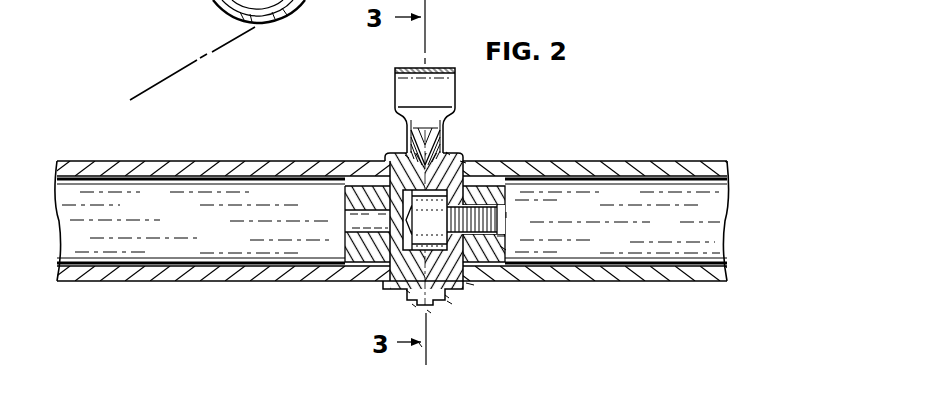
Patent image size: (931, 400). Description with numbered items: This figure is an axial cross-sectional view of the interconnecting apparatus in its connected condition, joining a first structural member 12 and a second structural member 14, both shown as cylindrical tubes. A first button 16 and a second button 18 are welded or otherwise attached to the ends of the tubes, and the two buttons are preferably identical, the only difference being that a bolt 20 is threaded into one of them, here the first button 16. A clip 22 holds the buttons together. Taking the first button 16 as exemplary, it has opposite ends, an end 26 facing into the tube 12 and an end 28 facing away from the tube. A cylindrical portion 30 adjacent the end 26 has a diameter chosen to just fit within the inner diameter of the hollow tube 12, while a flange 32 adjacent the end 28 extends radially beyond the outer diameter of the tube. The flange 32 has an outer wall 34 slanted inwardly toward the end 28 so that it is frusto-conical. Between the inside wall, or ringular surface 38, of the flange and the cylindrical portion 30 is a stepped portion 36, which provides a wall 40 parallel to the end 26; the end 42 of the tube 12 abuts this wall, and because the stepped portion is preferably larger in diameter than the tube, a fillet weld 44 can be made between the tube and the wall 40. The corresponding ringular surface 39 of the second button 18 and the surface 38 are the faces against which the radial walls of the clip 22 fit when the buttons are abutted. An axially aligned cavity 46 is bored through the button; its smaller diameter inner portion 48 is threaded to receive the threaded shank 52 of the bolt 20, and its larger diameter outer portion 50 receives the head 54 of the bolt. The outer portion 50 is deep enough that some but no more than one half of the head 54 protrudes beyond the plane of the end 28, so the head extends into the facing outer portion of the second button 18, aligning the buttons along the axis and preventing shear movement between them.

The first structural member 12 is at (513, 214).
The second structural member 14 is at (174, 162).
The first button 16 is at (513, 232).
The second button 18 is at (337, 252).
The bolt 20 is at (514, 232).
The clip 22 is at (396, 67).
The end 26 is at (503, 248).
The end 28 is at (414, 298).
The cylindrical portion 30 is at (499, 193).
The flange 32 is at (420, 345).
The outer wall 34 is at (429, 312).
The stepped portion 36 is at (449, 297).
The ringular surface 38 is at (451, 303).
The ringular surface 39 is at (414, 306).
The wall 40 is at (470, 284).
The end 42 is at (448, 153).
The fillet weld 44 is at (463, 163).
The cavity 46 is at (512, 215).
The inner portion 48 is at (562, 280).
The outer portion 50 is at (408, 292).
The threaded shank 52 is at (514, 233).
The head 54 is at (405, 156).